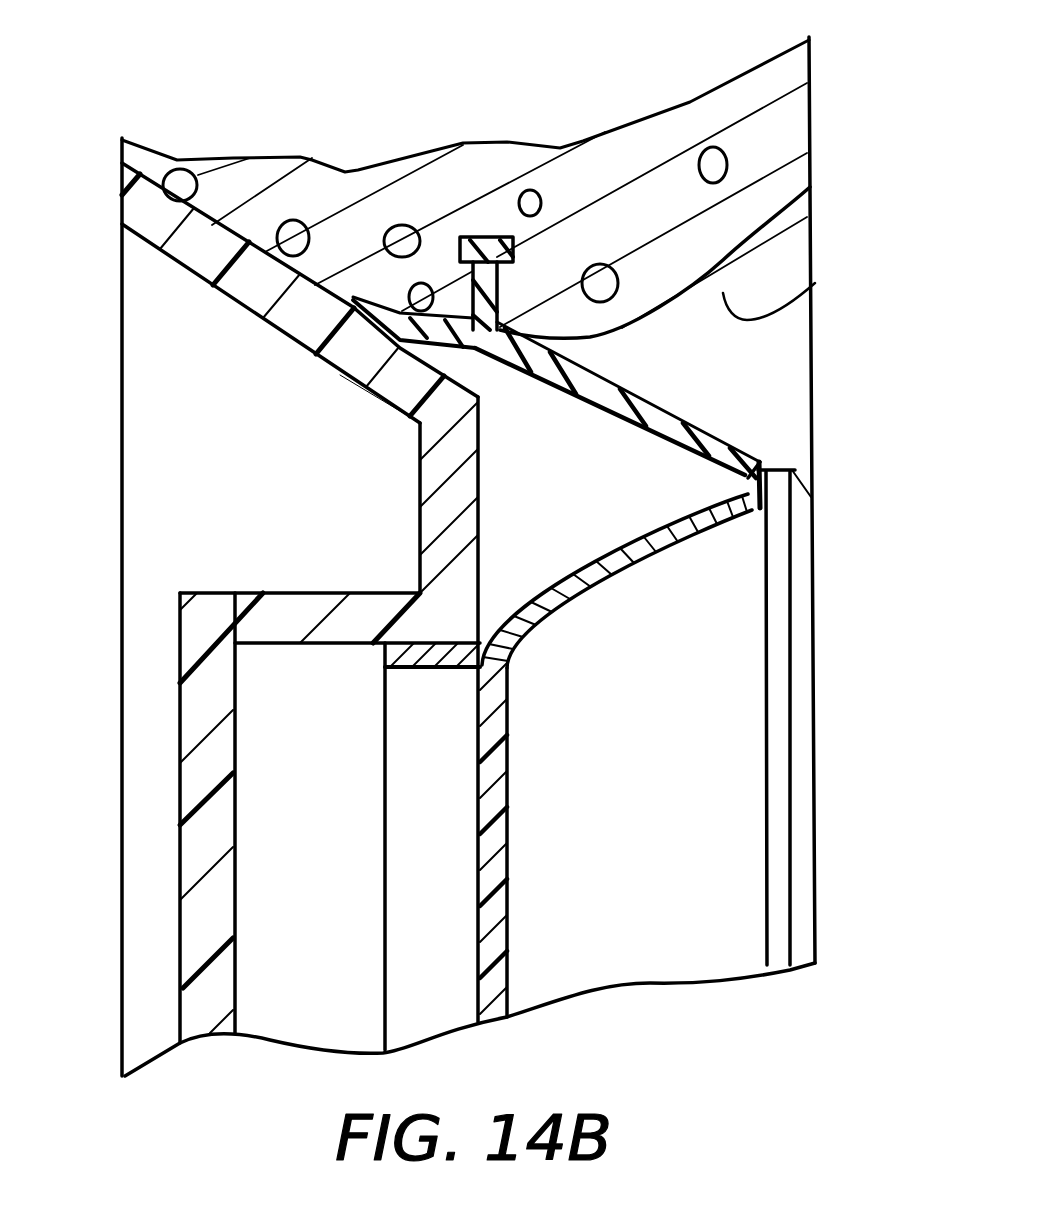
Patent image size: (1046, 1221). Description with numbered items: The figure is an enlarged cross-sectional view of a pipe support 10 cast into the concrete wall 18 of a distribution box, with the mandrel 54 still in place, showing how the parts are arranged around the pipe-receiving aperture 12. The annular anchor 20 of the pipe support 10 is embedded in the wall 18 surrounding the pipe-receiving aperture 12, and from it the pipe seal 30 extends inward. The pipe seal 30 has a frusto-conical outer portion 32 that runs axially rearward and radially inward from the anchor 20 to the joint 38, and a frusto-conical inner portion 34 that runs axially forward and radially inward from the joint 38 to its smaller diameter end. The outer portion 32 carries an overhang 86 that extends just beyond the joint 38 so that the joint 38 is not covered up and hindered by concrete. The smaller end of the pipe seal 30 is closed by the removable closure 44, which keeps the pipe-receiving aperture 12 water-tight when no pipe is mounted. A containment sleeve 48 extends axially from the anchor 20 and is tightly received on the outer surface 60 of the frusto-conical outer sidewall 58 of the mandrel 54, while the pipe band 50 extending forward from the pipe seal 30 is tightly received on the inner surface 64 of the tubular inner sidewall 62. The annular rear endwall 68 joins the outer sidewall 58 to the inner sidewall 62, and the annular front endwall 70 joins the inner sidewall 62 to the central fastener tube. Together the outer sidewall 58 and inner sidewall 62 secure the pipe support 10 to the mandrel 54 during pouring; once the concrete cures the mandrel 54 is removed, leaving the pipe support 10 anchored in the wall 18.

The pipe support 10 is at (573, 765).
The pipe-receiving aperture 12 is at (813, 291).
The wall 18 is at (643, 150).
The annular anchor 20 is at (486, 237).
The pipe seal 30 is at (710, 528).
The outer portion 32 is at (688, 422).
The inner portion 34 is at (627, 560).
The joint 38 is at (747, 488).
The removable closure 44 is at (493, 887).
The containment sleeve 48 is at (340, 376).
The pipe band 50 is at (440, 670).
The mandrel 54 is at (174, 752).
The outer sidewall 58 is at (243, 288).
The outer surface 60 is at (218, 226).
The inner sidewall 62 is at (284, 605).
The inner surface 64 is at (313, 647).
The rear endwall 68 is at (443, 528).
The front endwall 70 is at (200, 852).
The overhang 86 is at (813, 500).